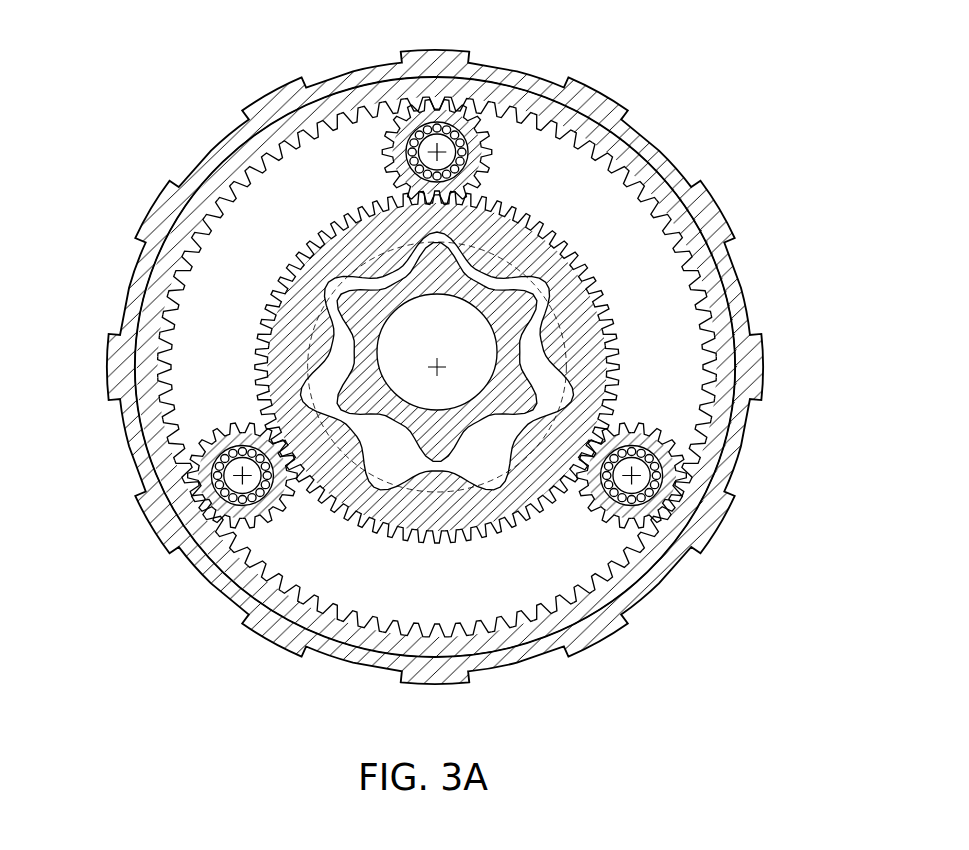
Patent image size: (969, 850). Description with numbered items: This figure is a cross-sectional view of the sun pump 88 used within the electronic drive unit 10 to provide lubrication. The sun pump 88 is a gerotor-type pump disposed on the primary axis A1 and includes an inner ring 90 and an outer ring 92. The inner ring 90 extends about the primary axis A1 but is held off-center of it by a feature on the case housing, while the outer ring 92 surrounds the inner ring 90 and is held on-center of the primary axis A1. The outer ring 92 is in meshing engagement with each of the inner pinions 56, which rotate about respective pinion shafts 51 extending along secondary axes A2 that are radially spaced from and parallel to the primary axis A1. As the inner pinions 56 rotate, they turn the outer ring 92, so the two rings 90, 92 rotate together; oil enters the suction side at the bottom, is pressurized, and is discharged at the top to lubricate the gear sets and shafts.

The electronic drive unit 10 is at (204, 107).
The sun pump 88 is at (341, 203).
The outer ring 92 is at (287, 336).
The inner ring 90 is at (363, 379).
The primary axis A1 is at (437, 366).
The inner pinion 56 is at (402, 120).
The pinion shaft 51 is at (458, 150).
The secondary axis A2 is at (447, 142).